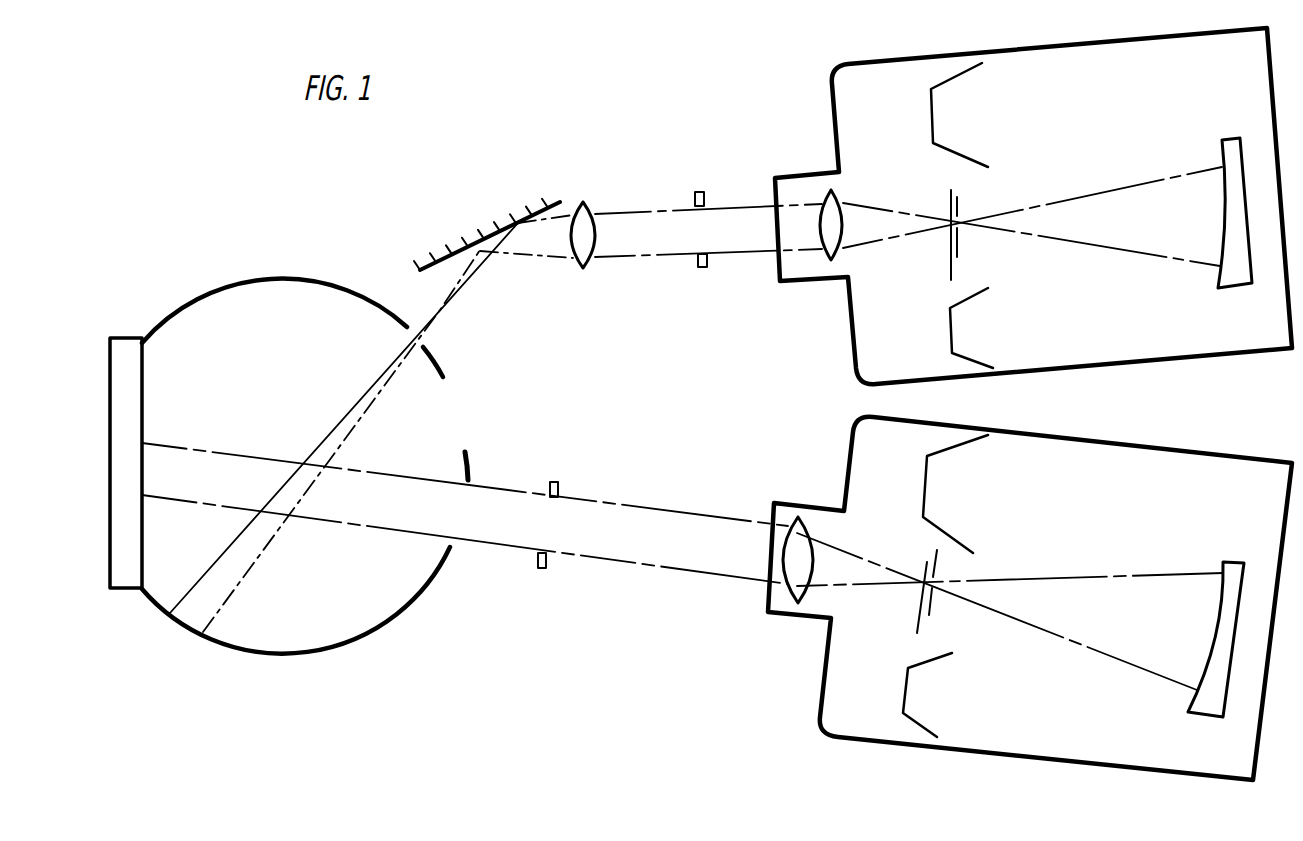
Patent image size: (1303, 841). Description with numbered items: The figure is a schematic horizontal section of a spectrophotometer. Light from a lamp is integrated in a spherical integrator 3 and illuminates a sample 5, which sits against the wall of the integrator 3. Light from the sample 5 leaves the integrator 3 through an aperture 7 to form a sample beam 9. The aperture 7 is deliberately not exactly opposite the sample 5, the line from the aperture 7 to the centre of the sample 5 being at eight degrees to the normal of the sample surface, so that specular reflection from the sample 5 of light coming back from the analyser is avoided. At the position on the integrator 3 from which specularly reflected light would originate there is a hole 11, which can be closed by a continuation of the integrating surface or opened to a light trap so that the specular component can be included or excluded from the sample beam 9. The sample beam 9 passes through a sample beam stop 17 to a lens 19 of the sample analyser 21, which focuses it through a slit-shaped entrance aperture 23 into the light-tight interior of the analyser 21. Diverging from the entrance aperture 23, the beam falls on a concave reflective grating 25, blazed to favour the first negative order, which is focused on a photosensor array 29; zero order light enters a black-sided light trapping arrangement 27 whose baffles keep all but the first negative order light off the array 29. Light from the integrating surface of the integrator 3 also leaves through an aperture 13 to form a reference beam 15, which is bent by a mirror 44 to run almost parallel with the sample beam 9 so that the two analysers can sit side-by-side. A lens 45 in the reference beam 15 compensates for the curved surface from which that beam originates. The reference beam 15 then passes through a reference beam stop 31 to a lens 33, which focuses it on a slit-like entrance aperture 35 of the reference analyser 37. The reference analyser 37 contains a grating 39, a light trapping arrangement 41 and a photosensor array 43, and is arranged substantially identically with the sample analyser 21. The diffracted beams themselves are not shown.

The spherical integrator 3 is at (267, 280).
The sample 5 is at (122, 414).
The aperture 7 is at (460, 510).
The sample beam 9 is at (660, 570).
The hole 11 is at (452, 421).
The aperture 13 is at (416, 335).
The reference beam 15 is at (626, 213).
The sample beam stop 17 is at (558, 491).
The lens 19 is at (797, 533).
The sample analyser 21 is at (822, 677).
The entrance aperture 23 is at (935, 587).
The grating 25 is at (1232, 565).
The light trapping arrangement 27 is at (960, 443).
The photosensor array 29 is at (917, 631).
The reference beam stop 31 is at (697, 192).
The lens 33 is at (838, 247).
The entrance aperture 35 is at (960, 215).
The reference analyser 37 is at (850, 343).
The grating 39 is at (1232, 147).
The light trapping arrangement 41 is at (947, 77).
The photosensor array 43 is at (940, 210).
The mirror 44 is at (488, 250).
The lens 45 is at (590, 262).